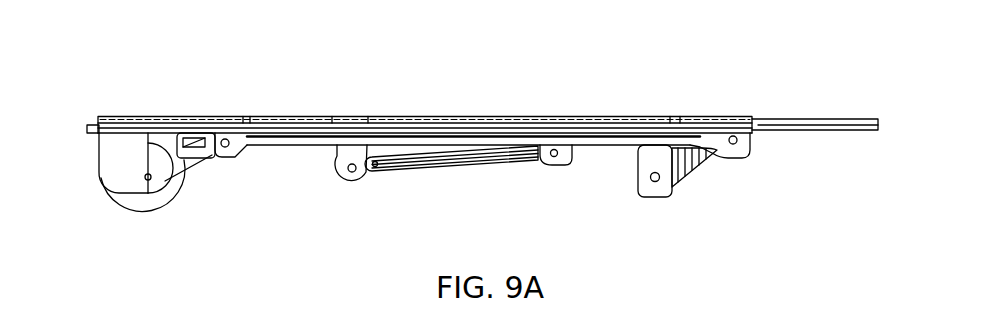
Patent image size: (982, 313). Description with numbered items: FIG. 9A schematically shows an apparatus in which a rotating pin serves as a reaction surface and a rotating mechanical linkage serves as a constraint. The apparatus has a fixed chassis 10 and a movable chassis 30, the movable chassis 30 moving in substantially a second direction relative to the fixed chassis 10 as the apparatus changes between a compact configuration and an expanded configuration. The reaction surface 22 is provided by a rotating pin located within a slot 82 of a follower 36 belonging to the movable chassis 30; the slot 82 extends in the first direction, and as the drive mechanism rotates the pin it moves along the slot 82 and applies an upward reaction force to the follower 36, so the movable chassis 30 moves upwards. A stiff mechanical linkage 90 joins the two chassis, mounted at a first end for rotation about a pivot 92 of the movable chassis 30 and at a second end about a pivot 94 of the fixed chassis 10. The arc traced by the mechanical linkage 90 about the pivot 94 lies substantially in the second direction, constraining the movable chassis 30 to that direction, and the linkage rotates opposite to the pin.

The fixed chassis 10 is at (568, 158).
The reaction surface 22 is at (227, 139).
The movable chassis 30 is at (441, 116).
The follower 36 is at (198, 155).
The slot 82 is at (190, 137).
The mechanical linkage 90 is at (446, 166).
The pivot 92 is at (353, 172).
The pivot 94 is at (544, 162).